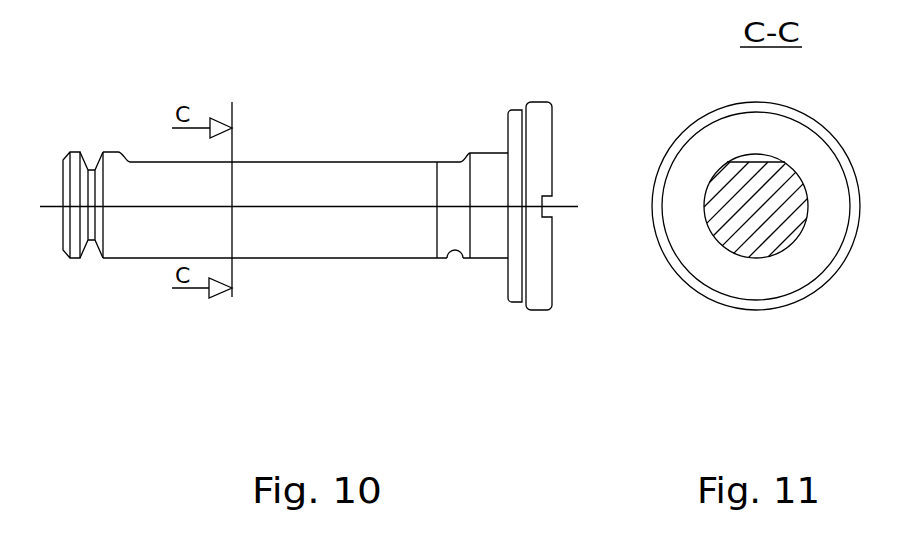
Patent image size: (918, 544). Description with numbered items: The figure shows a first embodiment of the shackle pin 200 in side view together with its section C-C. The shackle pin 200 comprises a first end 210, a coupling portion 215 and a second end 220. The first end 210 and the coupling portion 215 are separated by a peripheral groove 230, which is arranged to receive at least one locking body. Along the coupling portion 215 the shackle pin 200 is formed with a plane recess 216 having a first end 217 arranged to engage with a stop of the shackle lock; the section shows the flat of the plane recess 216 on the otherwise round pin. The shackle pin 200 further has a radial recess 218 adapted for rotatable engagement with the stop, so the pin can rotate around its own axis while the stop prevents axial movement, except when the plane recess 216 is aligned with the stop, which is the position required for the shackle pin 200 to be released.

In FIG. 10, the shackle pin 200 is at (402, 258).
In FIG. 11, the shackle pin 200 is at (800, 112).
In FIG. 10, the first end 210 is at (70, 152).
In FIG. 10, the peripheral groove 230 is at (92, 170).
In FIG. 10, the first end of the plane recess 217 is at (125, 160).
In FIG. 10, the plane recess 216 is at (352, 162).
In FIG. 11, the plane recess 216 is at (745, 162).
In FIG. 10, the coupling portion 215 is at (273, 258).
In FIG. 10, the radial recess 218 is at (455, 250).
In FIG. 10, the second end 220 is at (532, 102).